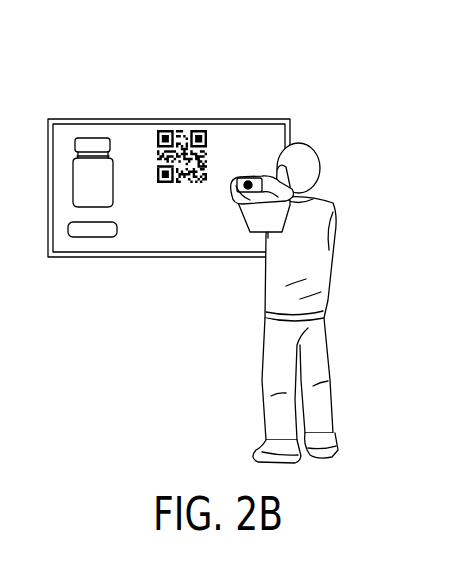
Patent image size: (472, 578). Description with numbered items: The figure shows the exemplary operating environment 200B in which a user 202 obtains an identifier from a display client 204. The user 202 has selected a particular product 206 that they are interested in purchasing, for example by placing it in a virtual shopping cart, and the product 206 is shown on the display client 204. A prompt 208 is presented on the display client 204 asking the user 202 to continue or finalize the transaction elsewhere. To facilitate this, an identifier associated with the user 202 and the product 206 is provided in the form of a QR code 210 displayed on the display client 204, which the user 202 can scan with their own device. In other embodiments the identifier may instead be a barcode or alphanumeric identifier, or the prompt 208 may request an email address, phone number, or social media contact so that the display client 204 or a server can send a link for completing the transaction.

The exemplary operating environment 200B is at (122, 88).
The user 202 is at (265, 272).
The display client 204 is at (252, 120).
The product 206 is at (73, 185).
The prompt 208 is at (178, 240).
The QR code 210 is at (186, 128).